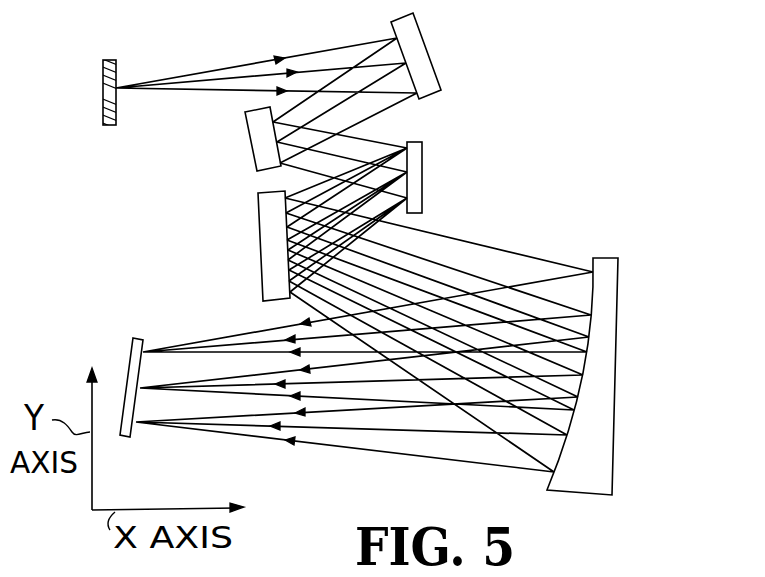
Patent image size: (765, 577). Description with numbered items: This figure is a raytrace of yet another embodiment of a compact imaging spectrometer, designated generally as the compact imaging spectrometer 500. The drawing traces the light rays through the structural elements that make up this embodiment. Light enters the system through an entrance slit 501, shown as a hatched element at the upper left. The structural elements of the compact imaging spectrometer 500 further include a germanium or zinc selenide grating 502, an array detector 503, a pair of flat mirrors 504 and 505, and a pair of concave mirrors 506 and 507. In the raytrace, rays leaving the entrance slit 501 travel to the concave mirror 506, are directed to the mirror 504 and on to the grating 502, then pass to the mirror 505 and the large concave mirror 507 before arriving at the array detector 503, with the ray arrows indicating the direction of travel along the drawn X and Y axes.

The compact imaging spectrometer 500 is at (519, 111).
The entrance slit 501 is at (103, 104).
The germanium or zinc selenide grating 502 is at (425, 176).
The array detector 503 is at (125, 362).
The mirror 504 is at (246, 150).
The mirror 505 is at (257, 238).
The concave mirror 506 is at (432, 50).
The concave mirror 507 is at (618, 362).